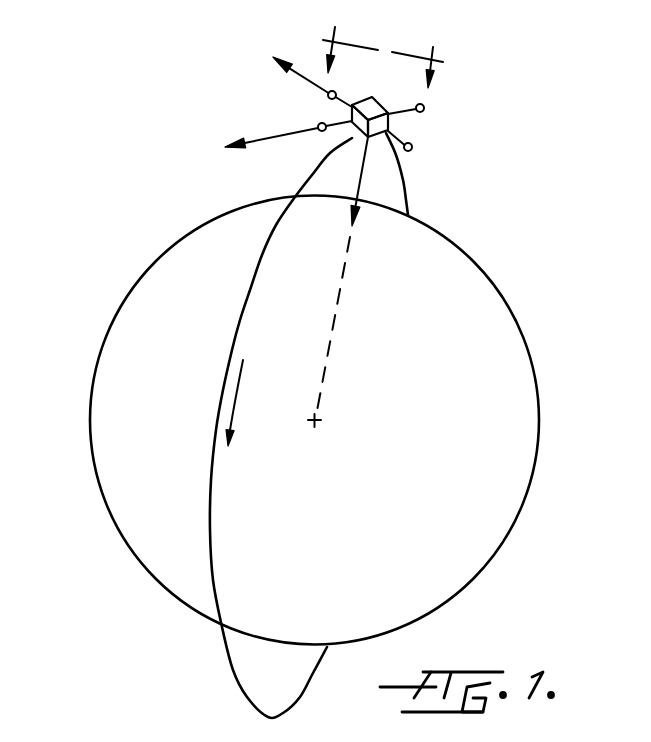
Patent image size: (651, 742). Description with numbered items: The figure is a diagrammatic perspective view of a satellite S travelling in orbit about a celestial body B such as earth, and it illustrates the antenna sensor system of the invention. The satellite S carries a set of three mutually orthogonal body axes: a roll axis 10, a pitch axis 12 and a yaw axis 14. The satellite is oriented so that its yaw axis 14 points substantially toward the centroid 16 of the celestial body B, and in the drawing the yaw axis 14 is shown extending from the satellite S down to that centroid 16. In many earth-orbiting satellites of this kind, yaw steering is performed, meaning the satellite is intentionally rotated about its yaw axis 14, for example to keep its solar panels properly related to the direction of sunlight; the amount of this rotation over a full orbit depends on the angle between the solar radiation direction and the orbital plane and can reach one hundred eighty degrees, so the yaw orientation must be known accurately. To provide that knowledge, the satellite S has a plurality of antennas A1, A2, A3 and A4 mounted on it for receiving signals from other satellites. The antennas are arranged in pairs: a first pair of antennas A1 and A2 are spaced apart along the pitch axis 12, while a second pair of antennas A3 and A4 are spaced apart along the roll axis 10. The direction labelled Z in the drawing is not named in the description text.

The roll axis 10 is at (272, 142).
The pitch axis 12 is at (292, 77).
The yaw axis 14 is at (352, 184).
The centroid 16 is at (318, 418).
The antenna A1 is at (412, 148).
The antenna A2 is at (337, 91).
The antenna A3 is at (318, 125).
The antenna A4 is at (425, 108).
The satellite S is at (387, 154).
The celestial body B is at (90, 407).
The Z axis direction Z is at (393, 44).